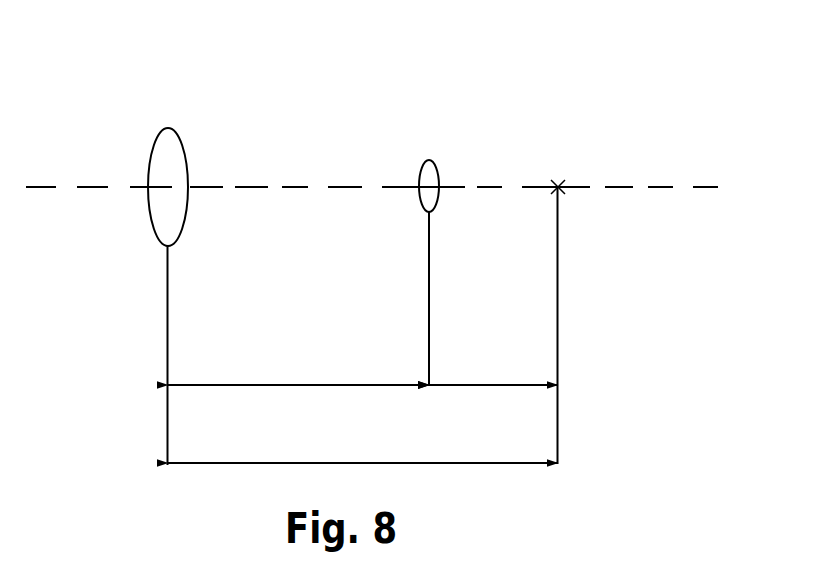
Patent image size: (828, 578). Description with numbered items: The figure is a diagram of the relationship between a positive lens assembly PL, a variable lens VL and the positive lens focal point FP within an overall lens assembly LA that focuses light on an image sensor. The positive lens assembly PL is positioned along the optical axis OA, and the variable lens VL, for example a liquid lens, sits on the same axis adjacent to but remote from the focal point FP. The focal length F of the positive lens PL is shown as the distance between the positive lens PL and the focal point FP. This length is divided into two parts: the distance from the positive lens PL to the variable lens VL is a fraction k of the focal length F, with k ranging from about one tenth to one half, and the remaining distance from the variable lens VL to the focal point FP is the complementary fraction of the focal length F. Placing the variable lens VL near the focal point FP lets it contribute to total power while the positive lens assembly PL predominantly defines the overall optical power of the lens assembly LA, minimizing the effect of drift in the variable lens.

The positive lens assembly PL is at (168, 128).
The variable lens VL is at (432, 160).
The positive lens focal point FP is at (558, 185).
The optical axis OA is at (627, 187).
The overall lens assembly LA is at (495, 68).
The focal length F is at (418, 464).